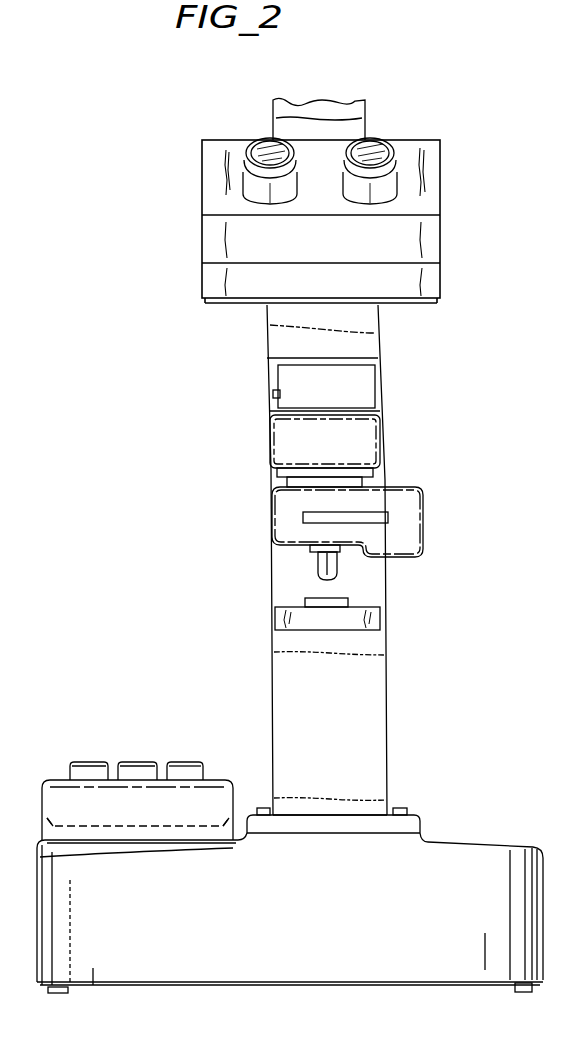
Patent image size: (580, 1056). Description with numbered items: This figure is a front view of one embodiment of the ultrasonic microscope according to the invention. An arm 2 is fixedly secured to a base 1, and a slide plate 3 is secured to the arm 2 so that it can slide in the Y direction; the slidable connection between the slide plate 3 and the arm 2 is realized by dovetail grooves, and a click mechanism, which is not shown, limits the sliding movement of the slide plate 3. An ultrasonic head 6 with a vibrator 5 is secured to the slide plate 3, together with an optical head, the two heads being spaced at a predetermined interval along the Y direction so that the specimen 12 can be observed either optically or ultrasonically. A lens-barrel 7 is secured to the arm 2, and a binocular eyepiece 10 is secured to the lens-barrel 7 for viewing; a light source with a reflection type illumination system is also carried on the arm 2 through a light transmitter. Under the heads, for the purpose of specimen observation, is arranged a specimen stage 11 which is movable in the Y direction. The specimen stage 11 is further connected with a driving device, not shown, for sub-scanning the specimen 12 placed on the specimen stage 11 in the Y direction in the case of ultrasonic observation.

The base 1 is at (480, 858).
The arm 2 is at (375, 735).
The slide plate 3 is at (367, 473).
The vibrator 5 is at (408, 527).
The ultrasonic head 6 is at (337, 569).
The lens-barrel 7 is at (373, 343).
The binocular eyepiece 10 is at (402, 160).
The specimen stage 11 is at (283, 623).
The specimen 12 is at (310, 598).